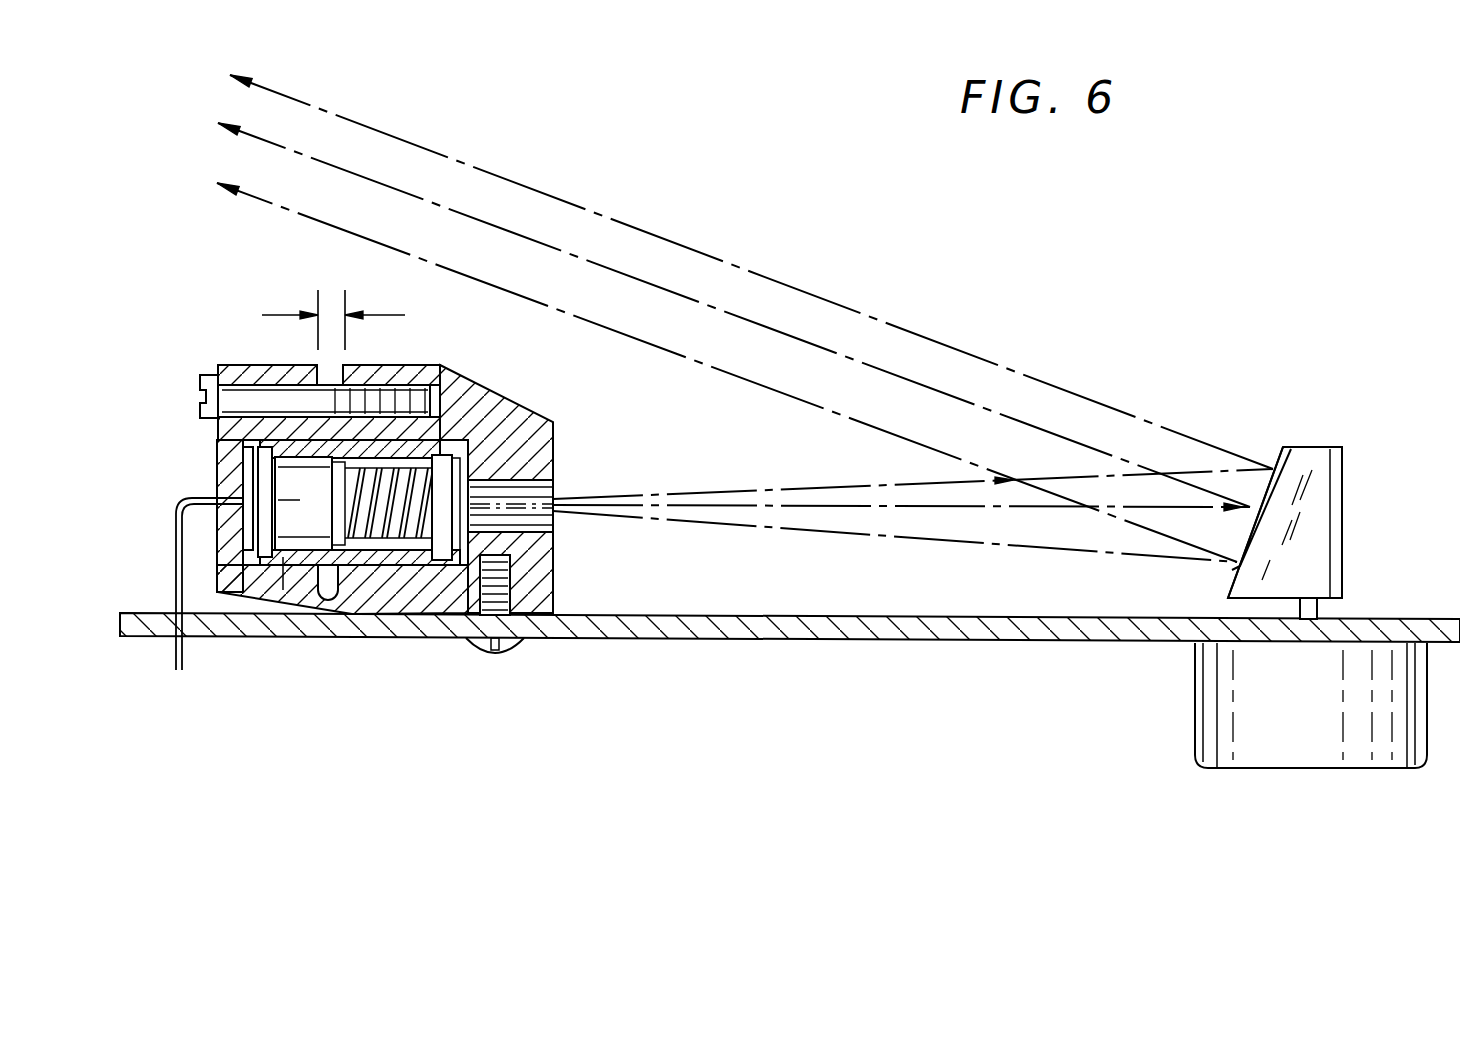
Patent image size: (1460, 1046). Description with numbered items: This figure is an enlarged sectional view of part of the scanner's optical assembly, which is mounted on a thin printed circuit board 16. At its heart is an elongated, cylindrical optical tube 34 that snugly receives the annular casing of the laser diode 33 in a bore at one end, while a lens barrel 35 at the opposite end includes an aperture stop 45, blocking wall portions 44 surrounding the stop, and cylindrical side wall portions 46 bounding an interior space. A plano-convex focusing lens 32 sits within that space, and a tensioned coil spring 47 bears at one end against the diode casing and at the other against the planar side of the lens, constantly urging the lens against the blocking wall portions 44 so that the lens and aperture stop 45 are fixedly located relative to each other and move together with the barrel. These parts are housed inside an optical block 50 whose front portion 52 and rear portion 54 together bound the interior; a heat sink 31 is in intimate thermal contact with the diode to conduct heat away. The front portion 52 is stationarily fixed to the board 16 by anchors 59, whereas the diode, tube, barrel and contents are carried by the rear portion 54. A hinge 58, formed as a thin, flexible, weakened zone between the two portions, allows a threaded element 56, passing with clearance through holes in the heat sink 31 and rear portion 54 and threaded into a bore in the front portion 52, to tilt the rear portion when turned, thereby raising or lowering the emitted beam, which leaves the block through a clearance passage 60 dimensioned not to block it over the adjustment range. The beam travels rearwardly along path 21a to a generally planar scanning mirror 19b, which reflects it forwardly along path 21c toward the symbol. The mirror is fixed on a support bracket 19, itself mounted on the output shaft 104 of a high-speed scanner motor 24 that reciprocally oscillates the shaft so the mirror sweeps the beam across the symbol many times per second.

The printed circuit board 16 is at (630, 637).
The support bracket 19 is at (1332, 460).
The scanning mirror 19b is at (1292, 448).
The first optical path 21a is at (910, 508).
The optical path 21c is at (908, 377).
The scanner motor 24 is at (1195, 700).
The heat sink 31 is at (236, 362).
The focusing lens 32 is at (445, 468).
The diode 33 is at (282, 537).
The optical tube 34 is at (377, 607).
The lens barrel 35 is at (435, 445).
The blocking wall portions 44 is at (540, 450).
The aperture stop 45 is at (440, 583).
The cylindrical side wall portions 46 is at (413, 583).
The coil spring 47 is at (337, 573).
The optical block 50 is at (566, 417).
The front portion 52 is at (552, 585).
The rear portion 54 is at (272, 370).
The threaded element 56 is at (205, 418).
The hinge 58 is at (285, 590).
The anchors 59 is at (513, 650).
The clearance passage 60 is at (548, 486).
The output shaft 104 is at (1322, 610).